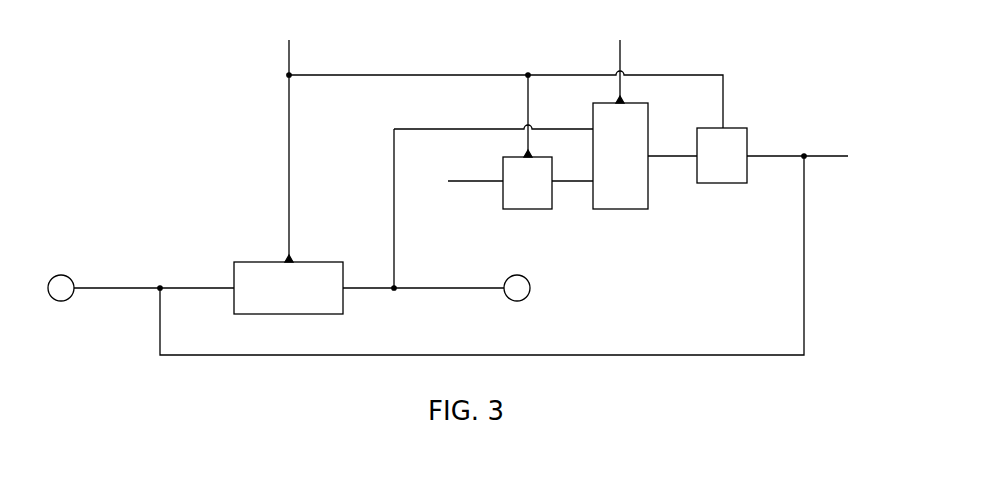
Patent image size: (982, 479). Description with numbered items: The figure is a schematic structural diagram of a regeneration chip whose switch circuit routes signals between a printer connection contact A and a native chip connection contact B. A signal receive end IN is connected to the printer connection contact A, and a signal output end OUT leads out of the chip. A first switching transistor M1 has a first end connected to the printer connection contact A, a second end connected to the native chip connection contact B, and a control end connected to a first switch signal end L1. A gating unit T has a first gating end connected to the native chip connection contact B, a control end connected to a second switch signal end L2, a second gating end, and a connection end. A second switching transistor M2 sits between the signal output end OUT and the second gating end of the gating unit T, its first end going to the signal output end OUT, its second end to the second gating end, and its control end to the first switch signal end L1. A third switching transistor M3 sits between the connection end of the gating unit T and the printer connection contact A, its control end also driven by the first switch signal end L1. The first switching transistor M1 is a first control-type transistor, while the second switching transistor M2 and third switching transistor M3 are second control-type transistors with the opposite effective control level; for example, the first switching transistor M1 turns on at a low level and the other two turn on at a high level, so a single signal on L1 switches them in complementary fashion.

The first switch signal end L1 is at (288, 138).
The second switch signal end L2 is at (620, 59).
The first switching transistor M1 is at (288, 288).
The second switching transistor M2 is at (527, 183).
The third switching transistor M3 is at (722, 155).
The gating unit T is at (620, 156).
The printer connection contact A is at (61, 275).
The native chip connection contact B is at (517, 275).
The signal output end OUT is at (461, 201).
The signal receive end IN is at (869, 157).